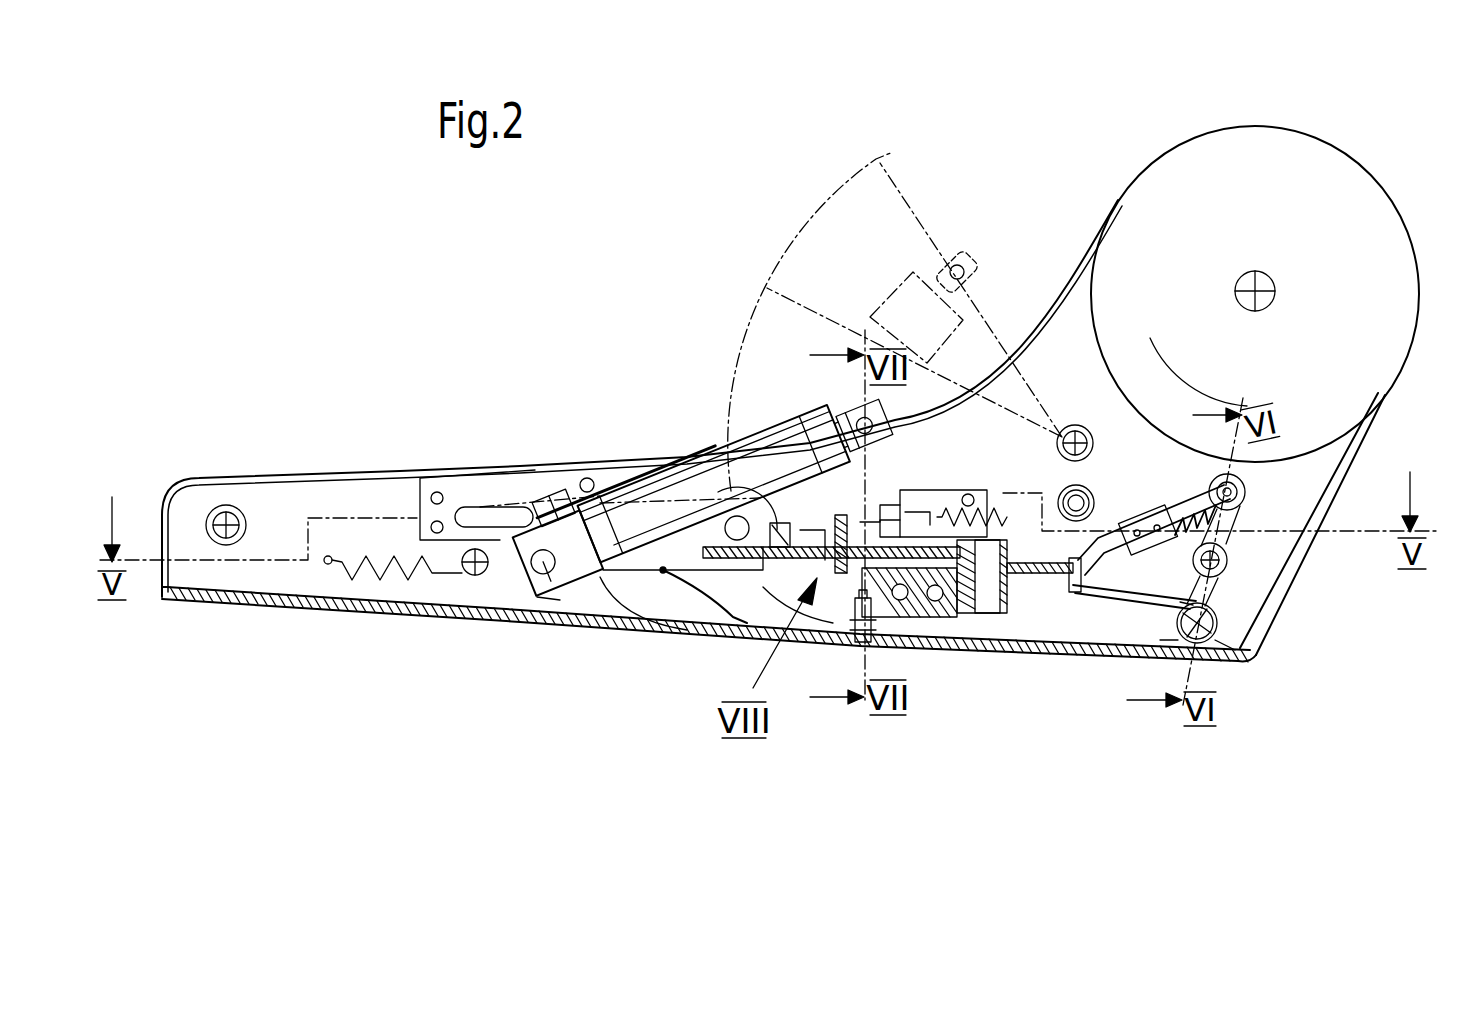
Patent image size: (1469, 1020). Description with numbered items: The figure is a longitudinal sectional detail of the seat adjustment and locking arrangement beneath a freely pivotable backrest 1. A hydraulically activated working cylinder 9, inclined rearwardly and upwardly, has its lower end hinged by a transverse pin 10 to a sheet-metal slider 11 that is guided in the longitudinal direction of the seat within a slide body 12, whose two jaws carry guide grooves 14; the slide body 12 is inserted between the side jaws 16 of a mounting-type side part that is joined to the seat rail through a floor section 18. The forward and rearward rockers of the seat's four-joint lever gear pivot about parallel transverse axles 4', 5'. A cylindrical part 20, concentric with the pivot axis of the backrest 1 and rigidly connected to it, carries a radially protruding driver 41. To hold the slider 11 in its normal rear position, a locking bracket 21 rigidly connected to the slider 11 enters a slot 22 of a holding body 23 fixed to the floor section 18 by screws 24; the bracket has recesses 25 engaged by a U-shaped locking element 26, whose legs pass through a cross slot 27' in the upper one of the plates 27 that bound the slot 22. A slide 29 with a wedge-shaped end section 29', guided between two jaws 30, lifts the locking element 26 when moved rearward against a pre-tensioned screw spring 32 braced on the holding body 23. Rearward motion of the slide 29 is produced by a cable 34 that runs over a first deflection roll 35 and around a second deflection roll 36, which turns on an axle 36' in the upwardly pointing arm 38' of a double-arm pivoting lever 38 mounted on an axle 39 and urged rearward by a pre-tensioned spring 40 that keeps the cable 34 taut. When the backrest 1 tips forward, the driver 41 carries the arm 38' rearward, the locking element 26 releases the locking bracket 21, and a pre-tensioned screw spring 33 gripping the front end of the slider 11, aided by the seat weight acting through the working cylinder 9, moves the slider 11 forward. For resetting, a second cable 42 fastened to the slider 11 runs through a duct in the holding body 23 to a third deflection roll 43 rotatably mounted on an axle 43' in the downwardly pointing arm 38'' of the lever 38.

The backrest 1 is at (1268, 280).
The axle 4' is at (221, 601).
The axle 5' is at (1092, 428).
The working cylinder 9 is at (607, 533).
The pin 10 is at (537, 597).
The slider 11 is at (635, 570).
The slide body 12 is at (455, 487).
The guide groove 14 is at (492, 517).
The side jaws 16 is at (268, 510).
The floor section 18 is at (428, 612).
The cylindrical part 20 is at (1318, 362).
The locking bracket 21 is at (775, 562).
The slot 22 is at (950, 633).
The holding body 23 is at (877, 630).
The screws 24 is at (890, 647).
The recess 25 is at (833, 573).
The locking element 26 is at (727, 442).
The plates 27 is at (978, 573).
The cross slot 27' is at (830, 531).
The slide 29 is at (837, 494).
The wedge-shaped end section 29' is at (626, 448).
The jaws 30 is at (960, 457).
The screw spring 32 is at (1000, 507).
The screw spring 33 is at (357, 567).
The cable 34 is at (1147, 507).
The first deflection roll 35 is at (1097, 490).
The second deflection roll 36 is at (1298, 490).
The axle 36' is at (1244, 525).
The double-arm pivoting lever 38 is at (1308, 605).
The upwardly pointing arm 38' is at (1291, 573).
The downwardly pointing arm 38'' is at (1276, 643).
The axle 39 is at (1243, 585).
The spring 40 is at (1195, 540).
The driver 41 is at (1364, 432).
The second cable 42 is at (693, 590).
The third deflection roll 43 is at (1253, 669).
The axle 43' is at (1144, 666).